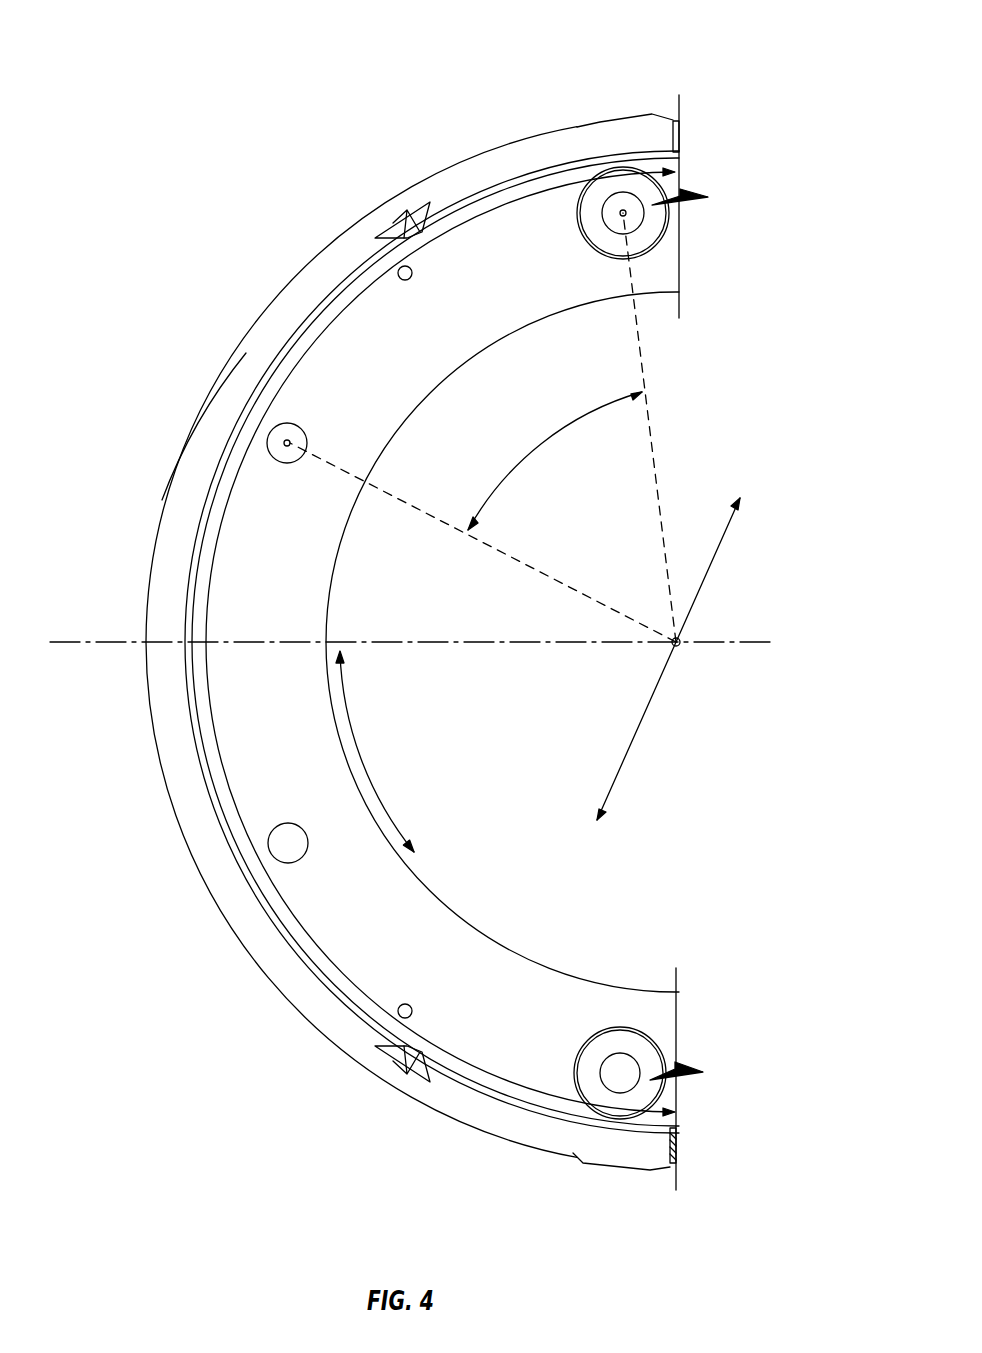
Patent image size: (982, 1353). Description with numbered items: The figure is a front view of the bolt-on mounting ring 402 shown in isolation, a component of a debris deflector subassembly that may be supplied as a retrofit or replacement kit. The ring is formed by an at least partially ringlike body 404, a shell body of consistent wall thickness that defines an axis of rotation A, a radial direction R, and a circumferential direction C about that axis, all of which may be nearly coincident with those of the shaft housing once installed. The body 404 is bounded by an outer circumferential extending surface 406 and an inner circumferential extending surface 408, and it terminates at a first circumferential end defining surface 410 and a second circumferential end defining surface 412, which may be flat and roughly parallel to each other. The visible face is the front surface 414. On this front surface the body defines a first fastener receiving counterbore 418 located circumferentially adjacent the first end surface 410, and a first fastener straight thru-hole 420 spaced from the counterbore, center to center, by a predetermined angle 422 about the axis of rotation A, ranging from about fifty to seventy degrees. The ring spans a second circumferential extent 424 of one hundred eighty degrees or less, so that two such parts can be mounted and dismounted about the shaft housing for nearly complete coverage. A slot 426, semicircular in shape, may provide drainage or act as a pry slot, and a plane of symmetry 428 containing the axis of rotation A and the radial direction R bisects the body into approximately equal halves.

The bolt-on mounting ring 402 is at (677, 76).
The at least partially ringlike body 404 is at (482, 147).
The outer circumferential extending surface 406 is at (295, 303).
The inner circumferential extending surface 408 is at (332, 580).
The first circumferential end defining surface 410 is at (680, 178).
The second circumferential end defining surface 412 is at (677, 1051).
The front surface 414 is at (402, 942).
The first fastener receiving counterbore 418 is at (643, 257).
The first fastener straight thru-hole 420 is at (290, 443).
The predetermined angle 422 is at (568, 437).
The second circumferential extent 424 is at (547, 160).
The slot 426 is at (577, 128).
The plane of symmetry 428 is at (542, 650).
The axis of rotation A is at (684, 648).
The radial direction R is at (650, 748).
The circumferential direction C is at (362, 758).